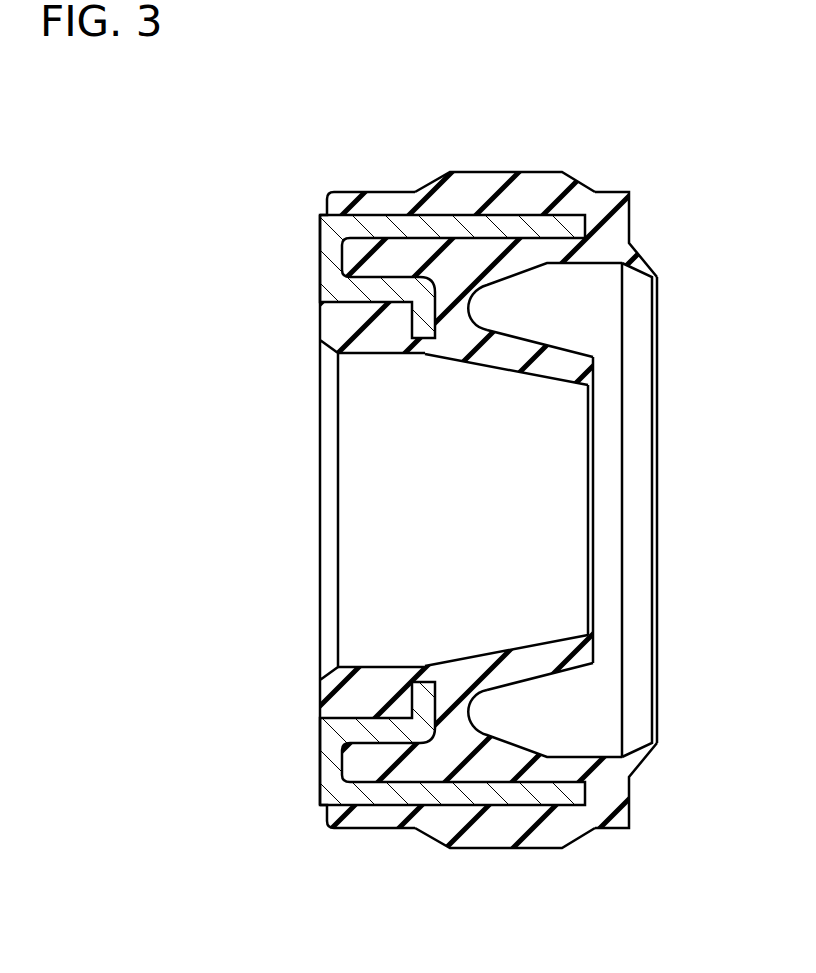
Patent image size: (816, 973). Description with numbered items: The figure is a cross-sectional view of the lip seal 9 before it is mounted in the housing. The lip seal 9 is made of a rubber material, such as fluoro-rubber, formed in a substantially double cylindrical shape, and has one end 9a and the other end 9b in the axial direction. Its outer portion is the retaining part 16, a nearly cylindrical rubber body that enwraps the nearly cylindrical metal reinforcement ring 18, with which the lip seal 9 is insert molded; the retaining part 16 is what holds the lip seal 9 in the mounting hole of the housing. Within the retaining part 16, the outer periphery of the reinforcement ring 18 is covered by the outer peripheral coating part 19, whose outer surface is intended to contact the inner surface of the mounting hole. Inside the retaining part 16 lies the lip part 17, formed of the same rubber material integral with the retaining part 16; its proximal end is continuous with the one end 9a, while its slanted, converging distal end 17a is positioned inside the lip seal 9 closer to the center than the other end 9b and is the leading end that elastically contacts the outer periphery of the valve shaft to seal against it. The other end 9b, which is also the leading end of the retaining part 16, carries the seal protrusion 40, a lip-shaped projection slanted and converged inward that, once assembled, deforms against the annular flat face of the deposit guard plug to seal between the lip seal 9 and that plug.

The lip seal 9 is at (362, 200).
The one end 9a is at (318, 318).
The other end 9b is at (630, 215).
The retaining part 16 is at (470, 172).
The lip part 17 is at (502, 330).
The distal end 17a is at (595, 366).
The reinforcement ring 18 is at (410, 228).
The outer peripheral coating part 19 is at (458, 823).
The seal protrusion 40 is at (656, 272).